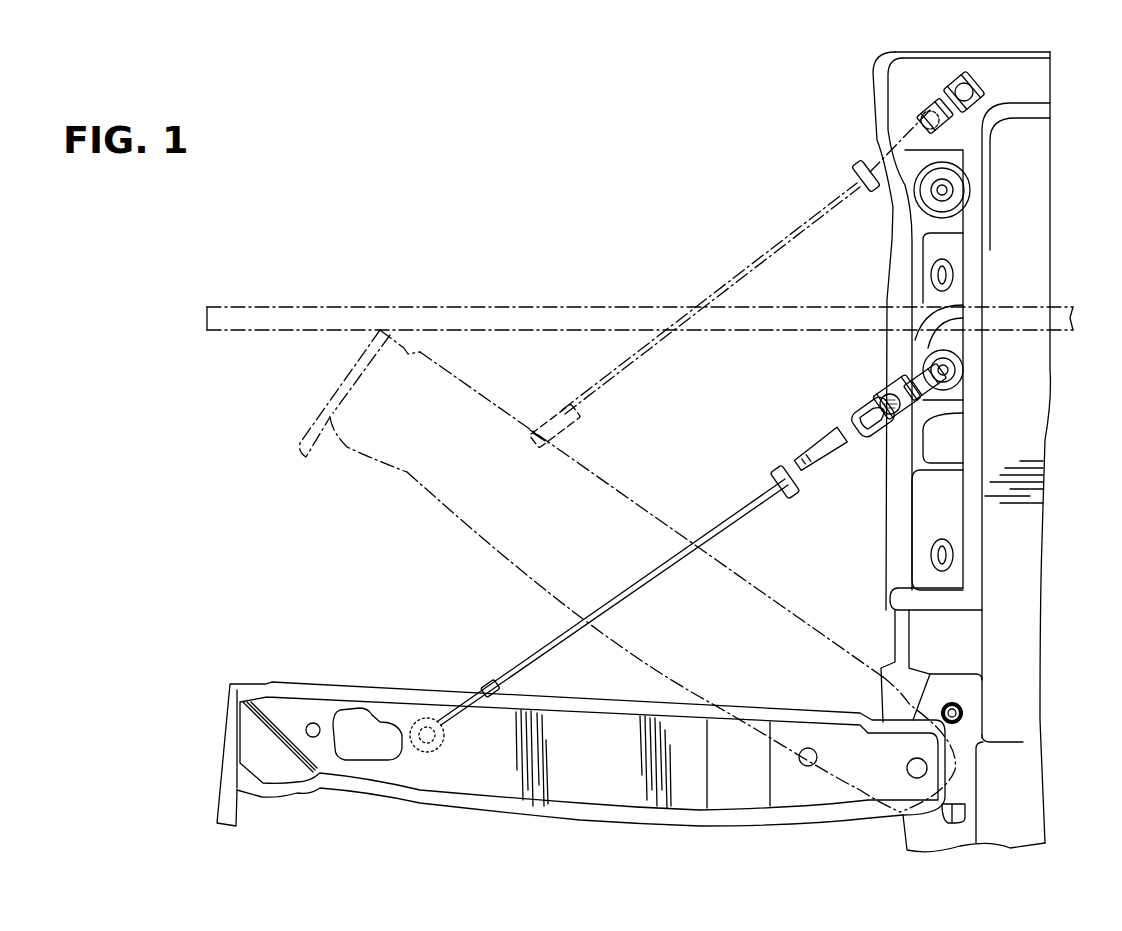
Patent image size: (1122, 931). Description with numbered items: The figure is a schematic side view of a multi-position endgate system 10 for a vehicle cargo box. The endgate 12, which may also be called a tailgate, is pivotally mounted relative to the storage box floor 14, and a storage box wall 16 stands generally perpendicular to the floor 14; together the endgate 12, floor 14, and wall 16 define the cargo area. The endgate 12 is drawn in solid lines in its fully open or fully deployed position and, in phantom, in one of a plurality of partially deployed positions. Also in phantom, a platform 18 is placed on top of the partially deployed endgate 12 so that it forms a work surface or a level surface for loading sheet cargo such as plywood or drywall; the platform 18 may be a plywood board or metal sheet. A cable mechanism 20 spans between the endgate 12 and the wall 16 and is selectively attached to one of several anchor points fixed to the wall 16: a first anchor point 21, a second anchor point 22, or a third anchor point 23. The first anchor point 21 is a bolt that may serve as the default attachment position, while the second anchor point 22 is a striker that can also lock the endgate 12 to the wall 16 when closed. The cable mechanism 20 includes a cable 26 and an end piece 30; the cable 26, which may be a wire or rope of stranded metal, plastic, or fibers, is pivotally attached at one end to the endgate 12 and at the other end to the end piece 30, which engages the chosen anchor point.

The multi-position endgate system 10 is at (270, 258).
The endgate 12 is at (601, 773).
The storage box floor 14 is at (1023, 742).
The storage box wall 16 is at (1008, 275).
The platform 18 is at (532, 312).
The cable mechanism 20 is at (656, 494).
The first anchor point 21 is at (950, 368).
The second anchor point 22 is at (937, 194).
The third anchor point 23 is at (937, 96).
The cable 26 is at (718, 293).
The end piece 30 is at (860, 393).